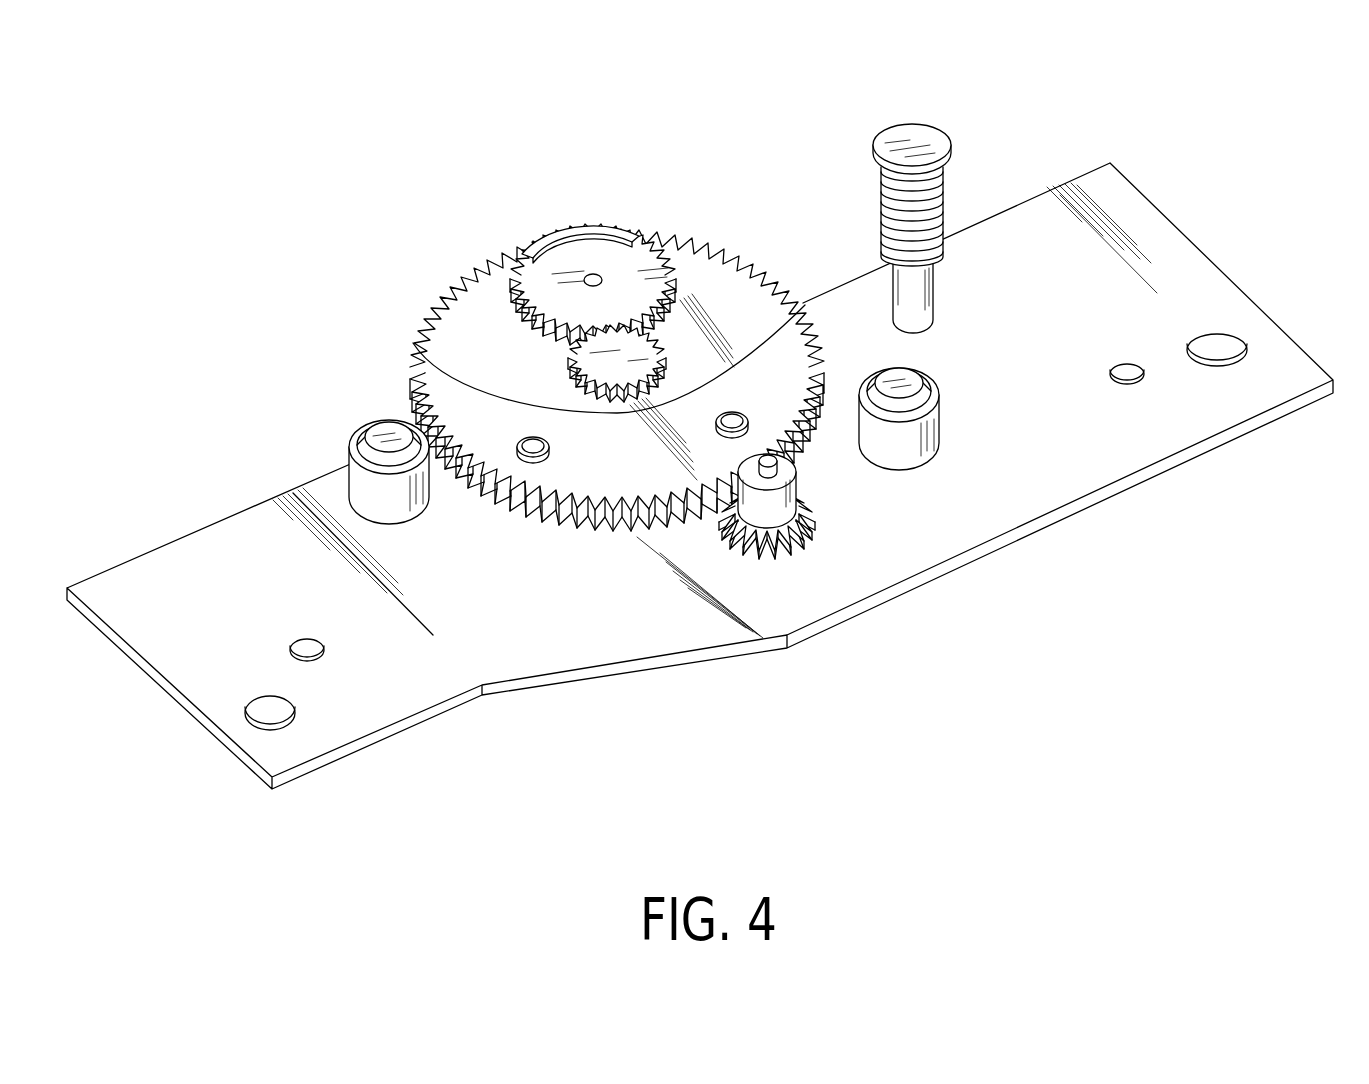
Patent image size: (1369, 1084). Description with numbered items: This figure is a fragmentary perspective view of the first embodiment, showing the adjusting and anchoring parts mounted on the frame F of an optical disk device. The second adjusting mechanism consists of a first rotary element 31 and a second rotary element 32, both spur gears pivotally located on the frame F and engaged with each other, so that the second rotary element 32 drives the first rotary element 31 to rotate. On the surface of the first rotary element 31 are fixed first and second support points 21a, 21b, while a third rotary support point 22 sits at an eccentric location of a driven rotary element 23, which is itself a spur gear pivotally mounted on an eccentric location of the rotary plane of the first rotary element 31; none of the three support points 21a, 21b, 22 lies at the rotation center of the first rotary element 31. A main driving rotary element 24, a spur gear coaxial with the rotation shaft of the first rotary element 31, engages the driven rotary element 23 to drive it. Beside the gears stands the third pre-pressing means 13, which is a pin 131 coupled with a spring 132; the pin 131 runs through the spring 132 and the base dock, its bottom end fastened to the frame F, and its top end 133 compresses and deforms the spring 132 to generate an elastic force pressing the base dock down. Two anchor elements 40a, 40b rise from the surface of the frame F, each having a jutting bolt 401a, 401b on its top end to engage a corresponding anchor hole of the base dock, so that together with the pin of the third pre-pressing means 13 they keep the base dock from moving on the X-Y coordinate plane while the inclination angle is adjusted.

The third pre-pressing means 13 is at (893, 197).
The pin 131 is at (900, 288).
The spring 132 is at (933, 192).
The top end 133 is at (913, 140).
The third rotary support point 22 is at (575, 226).
The driven rotary element 23 is at (551, 284).
The main driving rotary element 24 is at (604, 366).
The first rotary element 31 is at (722, 305).
The second rotary element 32 is at (783, 503).
The first support point 21a is at (533, 458).
The second support point 21b is at (750, 425).
The anchor element 40a is at (318, 453).
The anchor element 40b is at (1034, 319).
The jutting bolt 401a is at (370, 437).
The jutting bolt 401b is at (903, 380).
The frame F is at (683, 620).